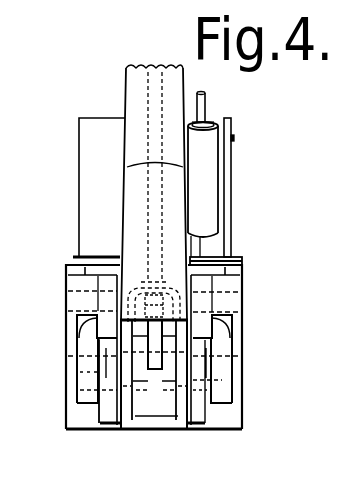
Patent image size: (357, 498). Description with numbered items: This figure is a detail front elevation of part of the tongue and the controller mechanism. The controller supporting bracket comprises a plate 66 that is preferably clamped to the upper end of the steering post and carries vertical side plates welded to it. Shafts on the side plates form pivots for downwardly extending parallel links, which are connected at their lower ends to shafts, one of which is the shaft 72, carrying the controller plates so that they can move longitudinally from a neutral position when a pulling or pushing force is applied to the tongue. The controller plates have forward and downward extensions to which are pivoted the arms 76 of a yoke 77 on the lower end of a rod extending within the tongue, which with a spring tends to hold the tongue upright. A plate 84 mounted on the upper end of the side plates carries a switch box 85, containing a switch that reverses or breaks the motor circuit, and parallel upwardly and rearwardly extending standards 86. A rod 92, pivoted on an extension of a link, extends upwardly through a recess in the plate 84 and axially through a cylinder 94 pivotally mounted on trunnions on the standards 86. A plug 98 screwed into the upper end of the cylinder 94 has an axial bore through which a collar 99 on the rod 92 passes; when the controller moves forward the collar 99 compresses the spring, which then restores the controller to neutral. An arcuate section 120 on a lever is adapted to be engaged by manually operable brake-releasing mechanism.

The plate 66 is at (222, 417).
The shaft 72 is at (100, 373).
The arms 76 is at (155, 370).
The yoke 77 is at (146, 279).
The plate 84 is at (242, 259).
The switch box 85 is at (79, 160).
The standards 86 is at (233, 180).
The rod 92 is at (205, 101).
The cylinder 94 is at (217, 203).
The plug 98 is at (210, 127).
The collar 99 is at (213, 123).
The arcuate section 120 is at (177, 450).